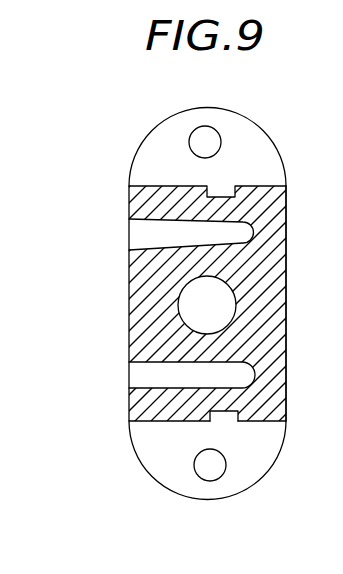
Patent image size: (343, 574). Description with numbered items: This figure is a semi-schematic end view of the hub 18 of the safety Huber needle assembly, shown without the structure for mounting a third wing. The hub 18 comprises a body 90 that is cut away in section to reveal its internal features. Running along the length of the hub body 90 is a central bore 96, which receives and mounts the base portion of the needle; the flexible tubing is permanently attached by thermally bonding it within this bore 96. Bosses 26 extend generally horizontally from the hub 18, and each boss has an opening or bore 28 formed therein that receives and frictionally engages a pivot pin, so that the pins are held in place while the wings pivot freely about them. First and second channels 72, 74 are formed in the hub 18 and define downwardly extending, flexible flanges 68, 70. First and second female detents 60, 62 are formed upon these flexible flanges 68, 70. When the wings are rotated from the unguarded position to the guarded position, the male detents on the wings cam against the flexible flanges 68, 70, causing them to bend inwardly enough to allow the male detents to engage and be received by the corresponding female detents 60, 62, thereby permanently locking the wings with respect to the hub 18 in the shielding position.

The hub 18 is at (305, 158).
The bosses 26 is at (167, 116).
The bores 28 is at (221, 150).
The first female detent 60 is at (171, 287).
The second female detent 62 is at (221, 414).
The first flexible flange 68 is at (128, 209).
The second flexible flange 70 is at (195, 437).
The first channel 72 is at (153, 249).
The second channel 74 is at (155, 389).
The hub body 90 is at (286, 258).
The central bore 96 is at (195, 283).